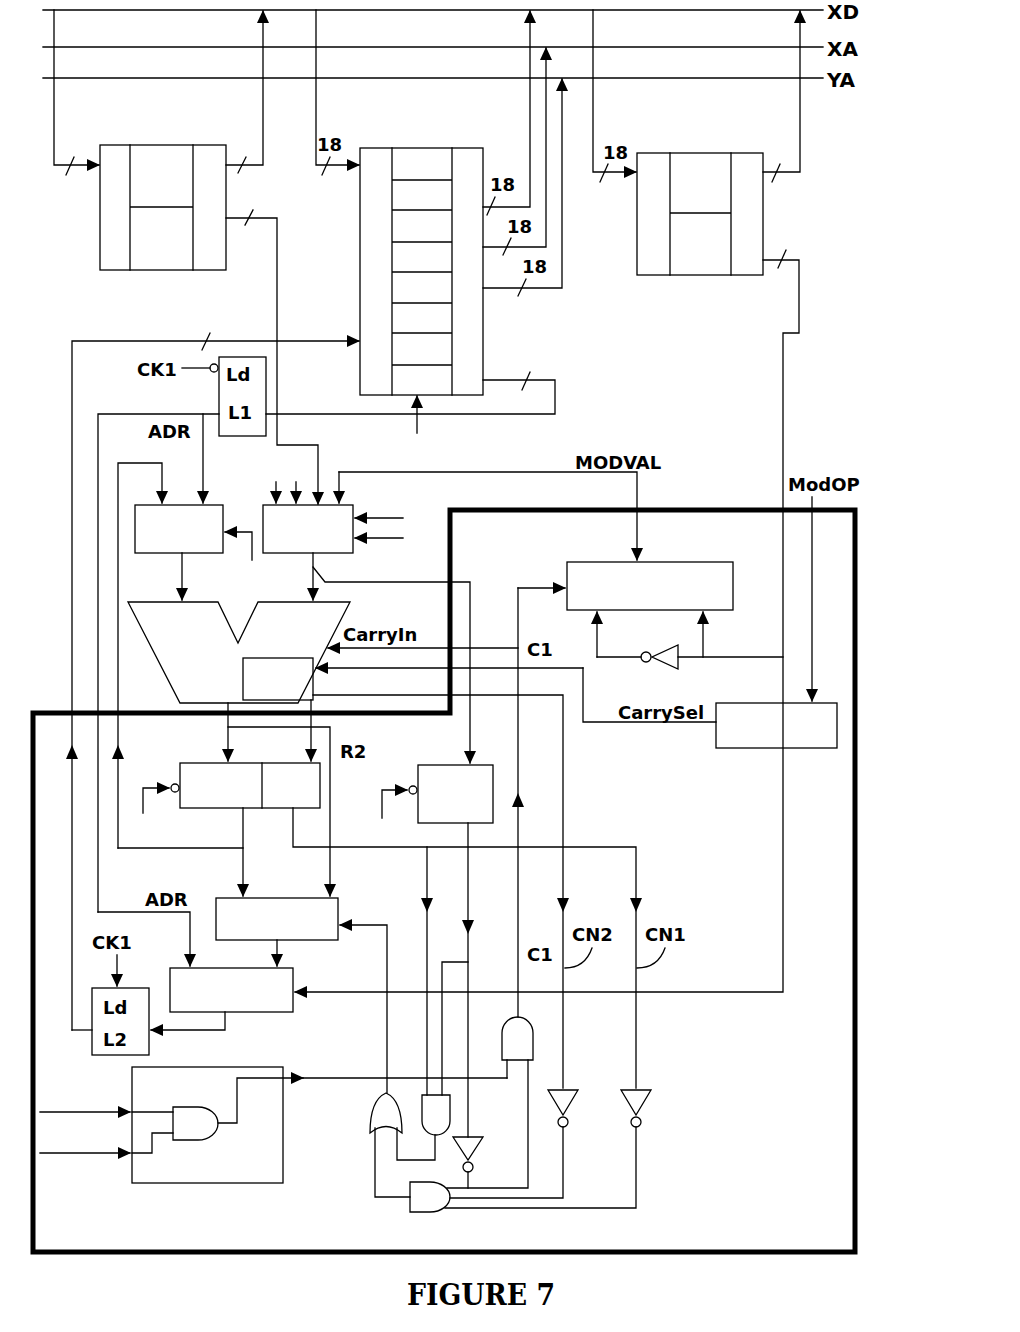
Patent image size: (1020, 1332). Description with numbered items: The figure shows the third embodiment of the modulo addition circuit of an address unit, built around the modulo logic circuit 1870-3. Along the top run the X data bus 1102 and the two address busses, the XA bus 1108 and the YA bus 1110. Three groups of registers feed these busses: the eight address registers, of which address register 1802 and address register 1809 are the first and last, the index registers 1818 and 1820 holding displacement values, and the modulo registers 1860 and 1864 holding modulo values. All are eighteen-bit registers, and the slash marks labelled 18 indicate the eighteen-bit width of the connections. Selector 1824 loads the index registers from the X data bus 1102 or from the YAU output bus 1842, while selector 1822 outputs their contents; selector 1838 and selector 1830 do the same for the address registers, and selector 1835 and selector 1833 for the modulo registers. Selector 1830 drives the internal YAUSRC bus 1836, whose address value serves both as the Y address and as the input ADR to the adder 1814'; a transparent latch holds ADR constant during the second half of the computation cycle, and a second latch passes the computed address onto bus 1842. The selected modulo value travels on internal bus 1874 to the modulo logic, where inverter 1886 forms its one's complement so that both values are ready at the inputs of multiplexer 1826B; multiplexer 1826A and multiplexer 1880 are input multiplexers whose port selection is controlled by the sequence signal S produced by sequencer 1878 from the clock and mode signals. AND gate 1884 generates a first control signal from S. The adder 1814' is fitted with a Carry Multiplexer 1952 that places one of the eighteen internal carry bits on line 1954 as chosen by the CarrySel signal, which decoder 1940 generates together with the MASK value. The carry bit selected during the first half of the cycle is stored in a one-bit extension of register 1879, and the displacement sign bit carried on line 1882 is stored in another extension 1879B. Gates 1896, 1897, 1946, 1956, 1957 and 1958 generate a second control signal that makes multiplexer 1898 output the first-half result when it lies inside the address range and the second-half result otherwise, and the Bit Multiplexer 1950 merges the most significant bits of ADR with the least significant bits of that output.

The X data bus 1102 is at (403, 12).
The XA address bus 1108 is at (403, 49).
The YA address bus 1110 is at (403, 80).
The address register 1802 is at (413, 245).
The address register 1809 is at (412, 148).
The index register 1818 is at (157, 181).
The index register 1820 is at (160, 145).
The selector 1822 is at (205, 145).
The selector 1824 is at (100, 248).
The multiplexer portion 1826A is at (350, 507).
The multiplexer portion 1826B is at (678, 562).
The selector 1830 is at (483, 313).
The selector 1833 is at (748, 153).
The selector 1835 is at (637, 218).
The internal YAUSRC bus 1836 is at (560, 410).
The selector 1838 is at (360, 241).
The YAU output data bus 1842 is at (190, 341).
The modulo register 1860 is at (697, 187).
The modulo register 1864 is at (697, 153).
The internal bus 1874 is at (783, 410).
The sequencer 1878 is at (225, 1183).
The R1 register 1879 is at (205, 763).
The one-bit extension of the R1 register 1879B is at (455, 765).
The multiplexer 1880 is at (135, 555).
The line 1882 is at (497, 882).
The AND gate 1884 is at (523, 1035).
The inverter 1886 is at (660, 670).
The gate 1896 is at (440, 1212).
The gate 1897 is at (370, 1105).
The multiplexer 1898 is at (262, 898).
The decoder 1940 is at (752, 748).
The gate 1946 is at (443, 1100).
The Bit Multiplexer 1950 is at (290, 1002).
The Carry Multiplexer 1952 is at (243, 690).
The line 1954 is at (352, 695).
The gate 1956 is at (472, 1143).
The gate 1957 is at (578, 1100).
The gate 1958 is at (651, 1100).
The adder 1814' is at (276, 643).
The modulo logic circuit 1870-3 is at (820, 1233).
The 18-bit bus width 18 is at (76, 92).